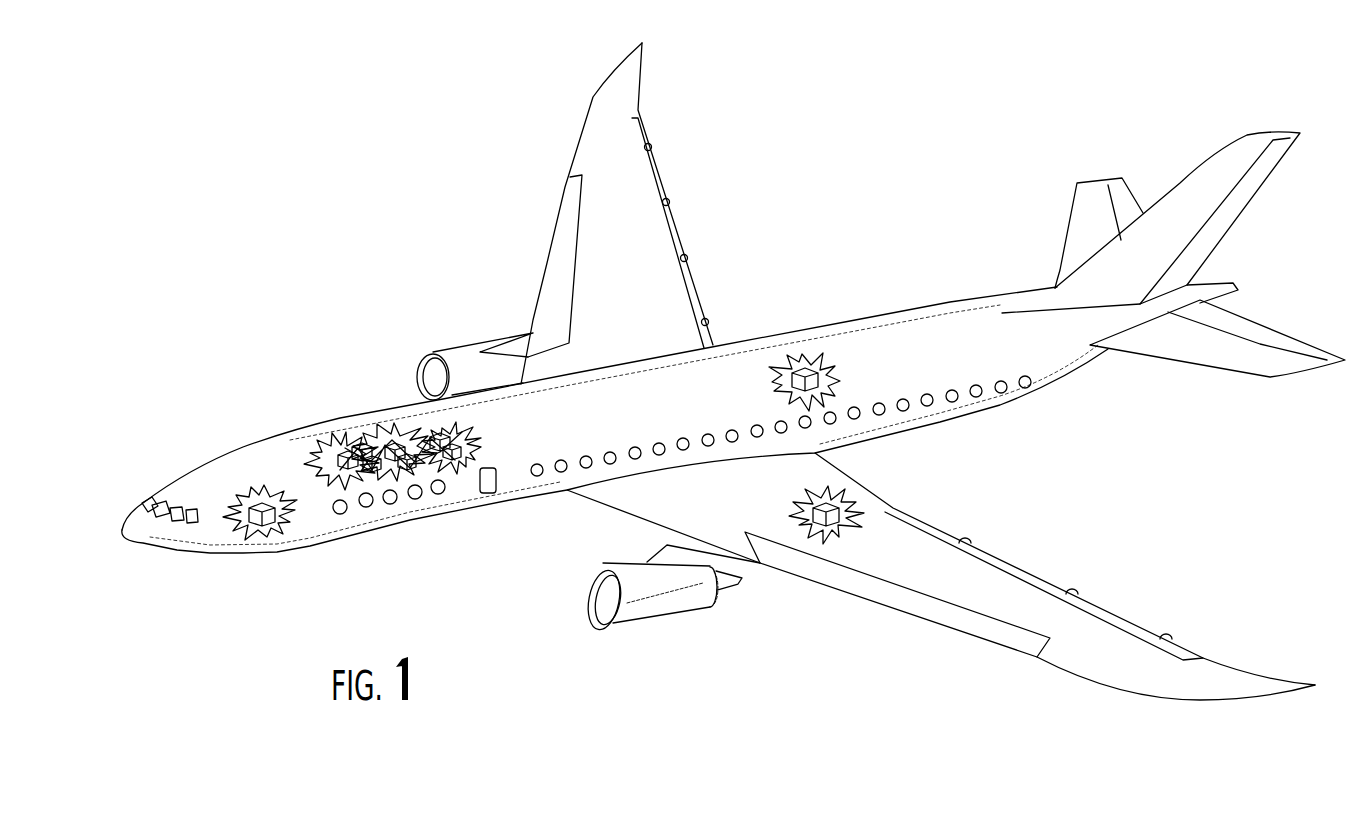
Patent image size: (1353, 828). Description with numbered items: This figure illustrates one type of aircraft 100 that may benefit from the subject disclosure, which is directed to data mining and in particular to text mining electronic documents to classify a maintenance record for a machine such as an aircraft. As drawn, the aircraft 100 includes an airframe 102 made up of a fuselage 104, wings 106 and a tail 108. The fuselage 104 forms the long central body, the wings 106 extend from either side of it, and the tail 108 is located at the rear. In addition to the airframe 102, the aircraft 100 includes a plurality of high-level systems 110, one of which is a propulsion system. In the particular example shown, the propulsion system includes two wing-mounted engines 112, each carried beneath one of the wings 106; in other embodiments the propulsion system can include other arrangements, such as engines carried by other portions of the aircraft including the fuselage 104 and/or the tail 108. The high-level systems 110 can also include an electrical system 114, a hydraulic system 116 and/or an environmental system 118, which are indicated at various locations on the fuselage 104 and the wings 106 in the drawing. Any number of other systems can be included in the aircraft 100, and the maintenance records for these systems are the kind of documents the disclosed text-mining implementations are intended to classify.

The aircraft 100 is at (352, 212).
The airframe 102 is at (358, 396).
The fuselage 104 is at (383, 532).
The wings 106 is at (573, 152).
The tail 108 is at (1022, 198).
The high-level systems 110 is at (1165, 503).
The wing-mounted engines 112 is at (456, 352).
The electrical system 114 is at (258, 506).
The hydraulic system 116 is at (830, 510).
The environmental system 118 is at (802, 372).